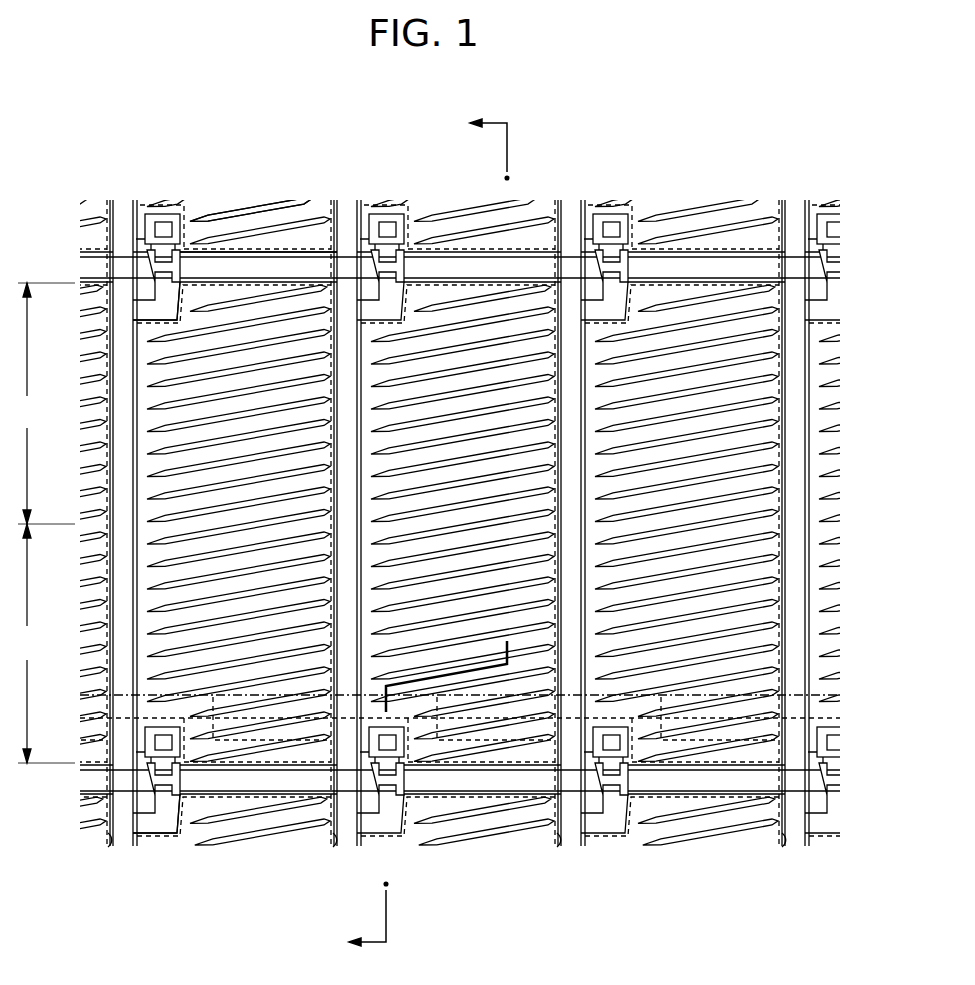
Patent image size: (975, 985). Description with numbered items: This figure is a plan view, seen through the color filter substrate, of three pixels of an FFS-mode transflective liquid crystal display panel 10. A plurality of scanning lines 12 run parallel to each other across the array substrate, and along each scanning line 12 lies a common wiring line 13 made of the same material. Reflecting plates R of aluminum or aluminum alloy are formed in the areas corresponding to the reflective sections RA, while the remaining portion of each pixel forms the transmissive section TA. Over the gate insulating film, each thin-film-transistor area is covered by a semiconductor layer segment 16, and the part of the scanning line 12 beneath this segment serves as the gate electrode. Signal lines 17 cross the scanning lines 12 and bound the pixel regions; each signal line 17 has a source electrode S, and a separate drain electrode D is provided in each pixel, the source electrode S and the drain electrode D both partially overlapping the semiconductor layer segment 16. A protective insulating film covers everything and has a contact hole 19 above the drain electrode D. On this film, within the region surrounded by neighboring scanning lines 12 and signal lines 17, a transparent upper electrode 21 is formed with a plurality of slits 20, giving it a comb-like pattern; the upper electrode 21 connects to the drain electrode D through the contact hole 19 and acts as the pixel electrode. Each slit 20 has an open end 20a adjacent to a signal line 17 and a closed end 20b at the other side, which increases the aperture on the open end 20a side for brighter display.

The FFS-mode transflective liquid crystal display panel 10 is at (146, 89).
The scanning line 12 is at (450, 262).
The common wiring line 13 is at (310, 772).
The semiconductor layer segment 16 is at (180, 800).
The signal line 17 is at (110, 837).
The contact hole 19 is at (158, 742).
The slit 20 is at (257, 297).
The open end 20a is at (340, 262).
The closed end 20b is at (203, 222).
The upper electrode 21 is at (133, 318).
The drain electrode D is at (153, 758).
The source electrode S is at (157, 818).
The reflecting plate R is at (262, 320).
The reflective section RA is at (42, 403).
The transmissive section TA is at (42, 643).